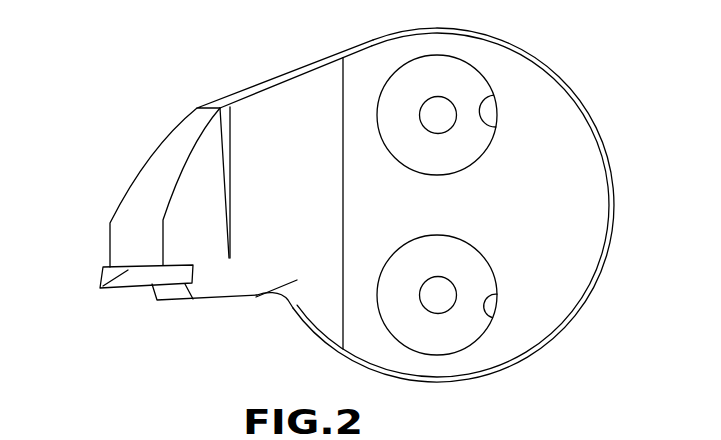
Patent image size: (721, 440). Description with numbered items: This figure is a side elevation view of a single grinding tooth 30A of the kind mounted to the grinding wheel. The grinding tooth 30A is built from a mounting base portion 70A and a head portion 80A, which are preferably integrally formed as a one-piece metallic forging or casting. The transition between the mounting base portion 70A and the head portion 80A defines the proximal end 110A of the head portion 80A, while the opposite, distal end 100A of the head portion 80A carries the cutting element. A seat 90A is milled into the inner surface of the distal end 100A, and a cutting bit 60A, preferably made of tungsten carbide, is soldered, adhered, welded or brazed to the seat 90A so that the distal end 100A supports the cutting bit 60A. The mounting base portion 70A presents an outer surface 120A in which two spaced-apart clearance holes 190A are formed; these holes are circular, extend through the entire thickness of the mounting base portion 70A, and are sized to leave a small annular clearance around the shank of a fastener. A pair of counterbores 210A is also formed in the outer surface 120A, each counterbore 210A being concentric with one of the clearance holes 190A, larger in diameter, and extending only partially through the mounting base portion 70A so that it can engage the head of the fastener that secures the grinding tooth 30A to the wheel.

The grinding tooth 30A is at (133, 124).
The mounting base portion 70A is at (567, 175).
The head portion 80A is at (279, 118).
The distal end 100A is at (138, 243).
The seat 90A is at (112, 278).
The cutting bit 60A is at (126, 290).
The proximal end 110A is at (257, 295).
The clearance holes 190A is at (450, 124).
The counterbores 210A is at (496, 123).
The outer surface 120A is at (581, 249).